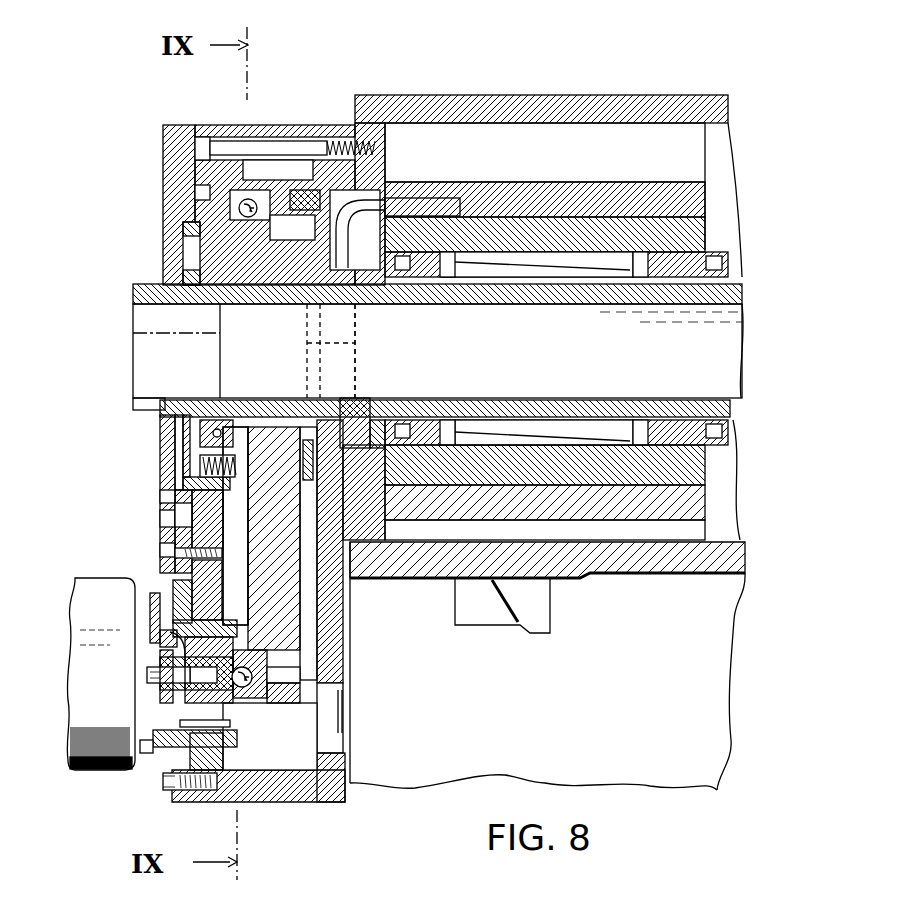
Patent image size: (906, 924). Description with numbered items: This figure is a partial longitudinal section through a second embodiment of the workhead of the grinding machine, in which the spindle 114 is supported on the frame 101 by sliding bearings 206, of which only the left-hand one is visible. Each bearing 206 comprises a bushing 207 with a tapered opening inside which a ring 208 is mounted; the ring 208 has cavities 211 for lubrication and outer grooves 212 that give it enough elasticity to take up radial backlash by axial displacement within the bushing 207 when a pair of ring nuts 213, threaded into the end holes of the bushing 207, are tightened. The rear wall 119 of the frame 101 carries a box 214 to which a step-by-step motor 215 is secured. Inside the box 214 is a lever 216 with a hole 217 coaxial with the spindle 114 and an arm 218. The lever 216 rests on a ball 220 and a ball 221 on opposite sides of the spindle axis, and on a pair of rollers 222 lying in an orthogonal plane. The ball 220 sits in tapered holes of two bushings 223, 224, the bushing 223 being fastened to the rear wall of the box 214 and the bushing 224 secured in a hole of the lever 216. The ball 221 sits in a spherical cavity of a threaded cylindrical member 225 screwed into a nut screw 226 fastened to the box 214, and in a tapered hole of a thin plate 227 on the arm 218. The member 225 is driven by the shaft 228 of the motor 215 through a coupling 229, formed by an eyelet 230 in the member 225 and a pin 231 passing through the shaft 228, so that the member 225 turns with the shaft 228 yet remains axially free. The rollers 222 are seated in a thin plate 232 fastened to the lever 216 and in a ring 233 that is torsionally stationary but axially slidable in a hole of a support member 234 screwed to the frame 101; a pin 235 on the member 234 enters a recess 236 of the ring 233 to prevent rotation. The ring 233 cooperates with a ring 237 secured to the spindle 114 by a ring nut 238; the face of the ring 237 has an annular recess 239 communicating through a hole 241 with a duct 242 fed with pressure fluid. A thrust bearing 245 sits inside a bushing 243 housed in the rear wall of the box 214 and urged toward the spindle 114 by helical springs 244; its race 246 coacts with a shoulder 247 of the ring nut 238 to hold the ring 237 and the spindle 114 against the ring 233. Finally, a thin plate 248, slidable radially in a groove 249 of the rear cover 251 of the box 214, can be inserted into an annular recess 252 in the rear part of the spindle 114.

The frame 101 is at (628, 577).
The spindle 114 is at (738, 402).
The rear wall 119 is at (388, 128).
The sliding bearings 206 is at (725, 239).
The bushing 207 is at (535, 237).
The ring 208 is at (556, 300).
The cavities 211 is at (567, 420).
The outer grooves 212 is at (484, 430).
The ring nuts 213 is at (480, 435).
The box 214 is at (266, 802).
The step-by-step motor 215 is at (100, 771).
The lever 216 is at (256, 490).
The hole 217 is at (275, 420).
The arm 218 is at (257, 606).
The ball 220 is at (252, 200).
The ball 221 is at (258, 611).
The rollers 222 is at (376, 351).
The bushing 223 is at (200, 200).
The bushing 224 is at (300, 192).
The cylindrical member 225 is at (232, 702).
The nut screw 226 is at (224, 752).
The thin plate 227 is at (252, 690).
The shaft 228 is at (157, 670).
The coupling 229 is at (160, 585).
The eyelet 230 is at (160, 702).
The pin 231 is at (157, 637).
The thin plate 232 is at (335, 150).
The ring 233 is at (352, 430).
The support member 234 is at (352, 568).
The pin 235 is at (325, 560).
The recess 236 is at (322, 420).
The ring 237 is at (395, 440).
The ring nut 238 is at (205, 302).
The annular recess 239 is at (380, 255).
The hole 241 is at (316, 356).
The duct 242 is at (360, 200).
The bushing 243 is at (166, 462).
The helical springs 244 is at (166, 508).
The thrust bearing 245 is at (162, 440).
The race 246 is at (185, 240).
The shoulder 247 is at (180, 280).
The thin plate 248 is at (166, 478).
The groove 249 is at (166, 532).
The rear cover 251 is at (166, 148).
The annular recess 252 is at (140, 412).